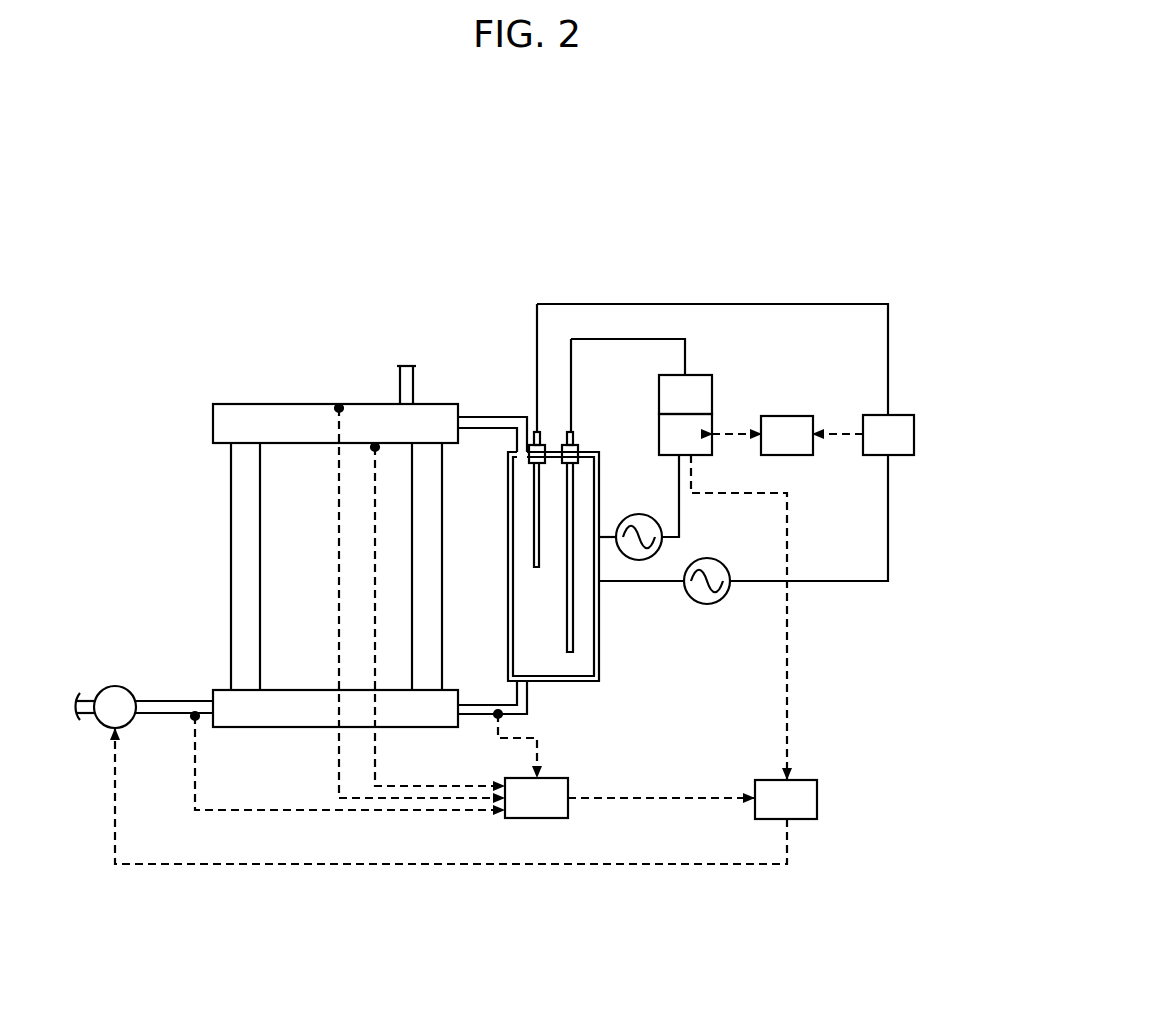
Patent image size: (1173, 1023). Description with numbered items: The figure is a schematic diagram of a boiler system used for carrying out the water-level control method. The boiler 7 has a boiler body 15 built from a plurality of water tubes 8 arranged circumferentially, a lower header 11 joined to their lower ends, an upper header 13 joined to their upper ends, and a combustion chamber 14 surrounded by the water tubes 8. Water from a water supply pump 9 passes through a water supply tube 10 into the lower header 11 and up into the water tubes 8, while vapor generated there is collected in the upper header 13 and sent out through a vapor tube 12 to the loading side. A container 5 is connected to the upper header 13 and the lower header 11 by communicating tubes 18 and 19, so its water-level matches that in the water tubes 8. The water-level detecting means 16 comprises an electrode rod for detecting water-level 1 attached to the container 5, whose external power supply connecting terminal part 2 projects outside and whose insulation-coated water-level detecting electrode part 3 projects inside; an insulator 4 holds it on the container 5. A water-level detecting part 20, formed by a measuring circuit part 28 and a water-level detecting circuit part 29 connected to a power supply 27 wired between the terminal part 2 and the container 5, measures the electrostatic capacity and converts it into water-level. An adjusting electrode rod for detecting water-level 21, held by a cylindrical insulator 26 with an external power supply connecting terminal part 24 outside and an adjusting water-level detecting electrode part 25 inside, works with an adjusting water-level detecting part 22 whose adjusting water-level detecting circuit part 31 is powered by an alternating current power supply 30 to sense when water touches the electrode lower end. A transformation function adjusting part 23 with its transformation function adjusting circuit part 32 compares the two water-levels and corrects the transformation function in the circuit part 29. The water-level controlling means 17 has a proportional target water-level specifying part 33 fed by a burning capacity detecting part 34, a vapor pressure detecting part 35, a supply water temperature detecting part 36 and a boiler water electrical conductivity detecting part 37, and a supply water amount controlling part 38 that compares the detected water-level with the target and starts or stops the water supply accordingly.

The electrode rod for detecting water-level 1 is at (562, 605).
The external power supply connecting terminal part 2 is at (573, 435).
The water-level detecting electrode part 3 is at (574, 632).
The electrode holder 4 is at (579, 447).
The container 5 is at (599, 603).
The boiler 7 is at (310, 555).
The water tubes 8 is at (244, 560).
The water supply pump 9 is at (116, 687).
The water supply tube 10 is at (168, 699).
The lower header 11 is at (270, 712).
The vapor tube 12 is at (403, 381).
The upper header 13 is at (285, 412).
The combustion chamber 14 is at (306, 600).
The boiler body 15 is at (226, 519).
The water-level detecting means 16 is at (557, 538).
The water-level controlling means 17 is at (587, 769).
The communicating tube 18 is at (469, 425).
The communicating tube 19 is at (480, 712).
The water-level detecting part 20 is at (721, 381).
The adjusting electrode rod for detecting water-level 21 is at (529, 482).
The adjusting water-level detecting part 22 is at (898, 395).
The transformation function adjusting part 23 is at (784, 397).
The external power supply connecting terminal part 24 is at (538, 432).
The adjusting water-level detecting electrode part 25 is at (535, 551).
The cylindrical insulator 26 is at (529, 457).
The power supply 27 is at (641, 513).
The measuring circuit part 28 is at (700, 387).
The water-level detecting circuit part 29 is at (700, 425).
The power supply 30 is at (709, 558).
The adjusting water-level detecting circuit part 31 is at (907, 425).
The transformation function adjusting circuit part 32 is at (795, 424).
The proportional target water-level specifying part 33 is at (550, 788).
The burning capacity detecting part 34 is at (373, 452).
The vapor pressure detecting part 35 is at (339, 405).
The supply water temperature detecting part 36 is at (193, 721).
The boiler water electrical conductivity detecting part 37 is at (502, 717).
The supply water amount controlling part 38 is at (798, 790).